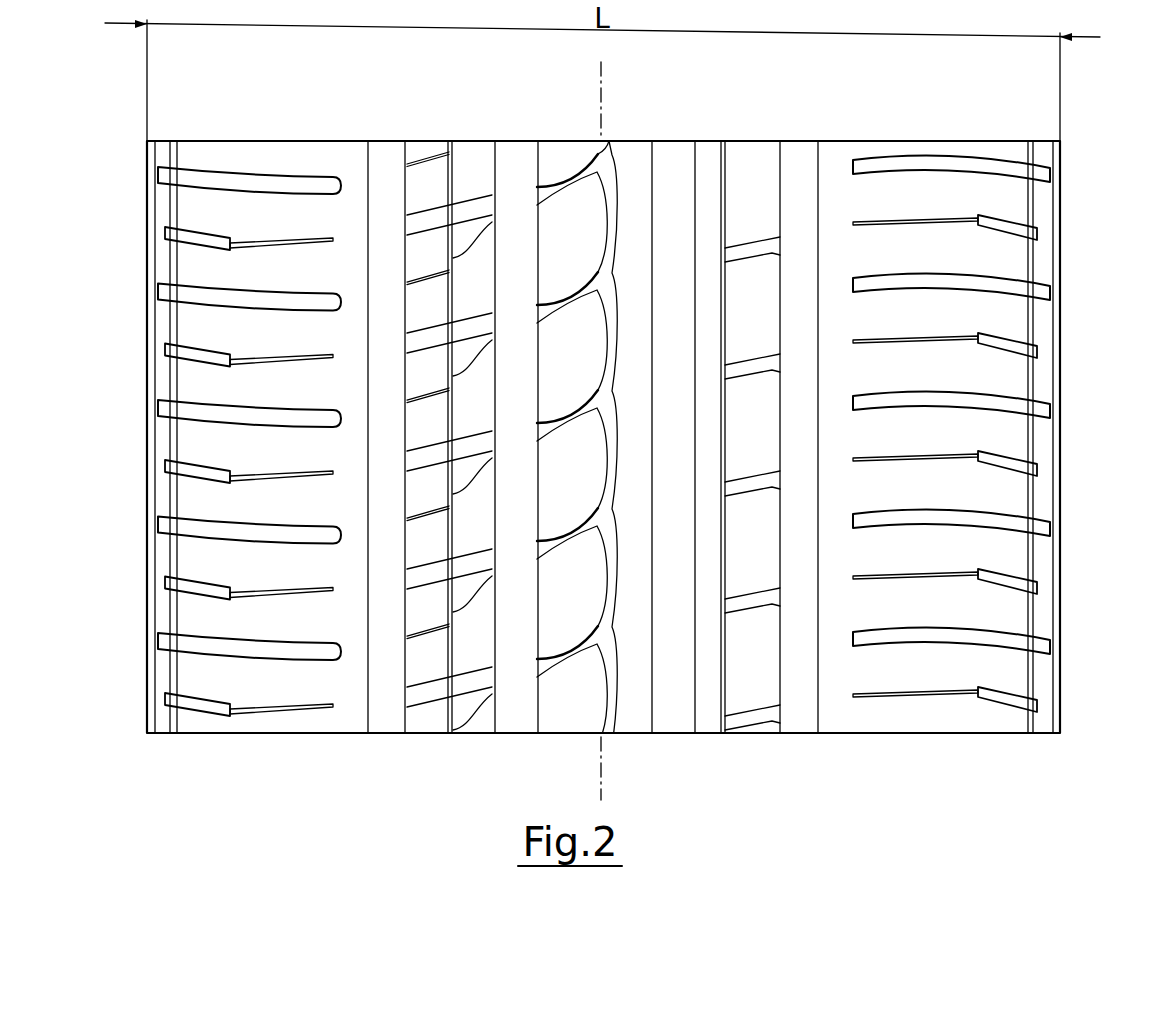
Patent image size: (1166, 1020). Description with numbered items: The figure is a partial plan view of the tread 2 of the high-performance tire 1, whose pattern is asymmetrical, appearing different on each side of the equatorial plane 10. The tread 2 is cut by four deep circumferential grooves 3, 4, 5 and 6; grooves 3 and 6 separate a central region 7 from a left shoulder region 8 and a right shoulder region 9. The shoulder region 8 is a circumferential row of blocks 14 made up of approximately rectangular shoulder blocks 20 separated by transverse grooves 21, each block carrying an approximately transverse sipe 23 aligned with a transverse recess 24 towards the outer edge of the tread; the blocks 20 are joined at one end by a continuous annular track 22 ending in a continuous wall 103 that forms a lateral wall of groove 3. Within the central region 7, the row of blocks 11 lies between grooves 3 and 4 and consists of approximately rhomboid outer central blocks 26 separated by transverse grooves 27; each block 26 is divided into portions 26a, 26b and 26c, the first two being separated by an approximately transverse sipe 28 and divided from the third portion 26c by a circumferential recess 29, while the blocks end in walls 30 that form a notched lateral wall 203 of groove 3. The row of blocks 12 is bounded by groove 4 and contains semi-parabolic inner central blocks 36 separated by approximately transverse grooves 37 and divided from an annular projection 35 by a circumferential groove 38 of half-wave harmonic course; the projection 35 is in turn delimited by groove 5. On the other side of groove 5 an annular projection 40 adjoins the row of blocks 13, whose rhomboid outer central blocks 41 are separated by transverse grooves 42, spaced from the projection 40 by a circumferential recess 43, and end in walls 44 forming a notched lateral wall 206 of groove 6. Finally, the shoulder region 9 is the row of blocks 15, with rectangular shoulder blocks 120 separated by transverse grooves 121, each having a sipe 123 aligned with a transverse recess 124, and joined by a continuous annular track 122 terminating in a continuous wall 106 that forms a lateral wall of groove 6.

The tire 1 is at (893, 139).
The tread 2 is at (1003, 139).
The circumferential groove 3 is at (386, 446).
The circumferential groove 4 is at (515, 140).
The circumferential groove 5 is at (675, 140).
The circumferential groove 6 is at (800, 447).
The central region 7 is at (635, 741).
The shoulder region 8 is at (291, 737).
The shoulder region 9 is at (903, 740).
The equatorial plane 10 is at (607, 790).
The row of blocks 11 is at (452, 139).
The row of blocks 12 is at (605, 404).
The row of blocks 13 is at (736, 399).
The row of blocks 14 is at (269, 139).
The row of blocks 15 is at (938, 139).
The shoulder blocks 20 is at (205, 428).
The transverse grooves 21 is at (255, 183).
The continuous annular track 22 is at (345, 140).
The sipe 23 is at (277, 240).
The transverse recess 24 is at (203, 231).
The outer central blocks 26 is at (497, 288).
The portion 26a is at (423, 254).
The portion 26b is at (423, 308).
The third portion 26c is at (468, 290).
The transverse grooves 27 is at (458, 213).
The sipe 28 is at (404, 276).
The circumferential recess 29 is at (490, 219).
The walls 30 is at (405, 392).
The annular projection 35 is at (632, 140).
The inner central blocks 36 is at (581, 251).
The transverse grooves 37 is at (587, 278).
The circumferential groove 38 is at (613, 440).
The annular projection 40 is at (707, 140).
The outer central blocks 41 is at (763, 214).
The transverse grooves 42 is at (740, 248).
The circumferential recess 43 is at (722, 335).
The walls 44 is at (782, 421).
The continuous wall 103 is at (370, 735).
The notched lateral wall 203 is at (400, 735).
The continuous wall 106 is at (816, 735).
The notched lateral wall 206 is at (784, 735).
The shoulder blocks 120 is at (989, 434).
The transverse grooves 121 is at (957, 163).
The continuous annular track 122 is at (832, 140).
The sipe 123 is at (913, 222).
The transverse recess 124 is at (1015, 228).